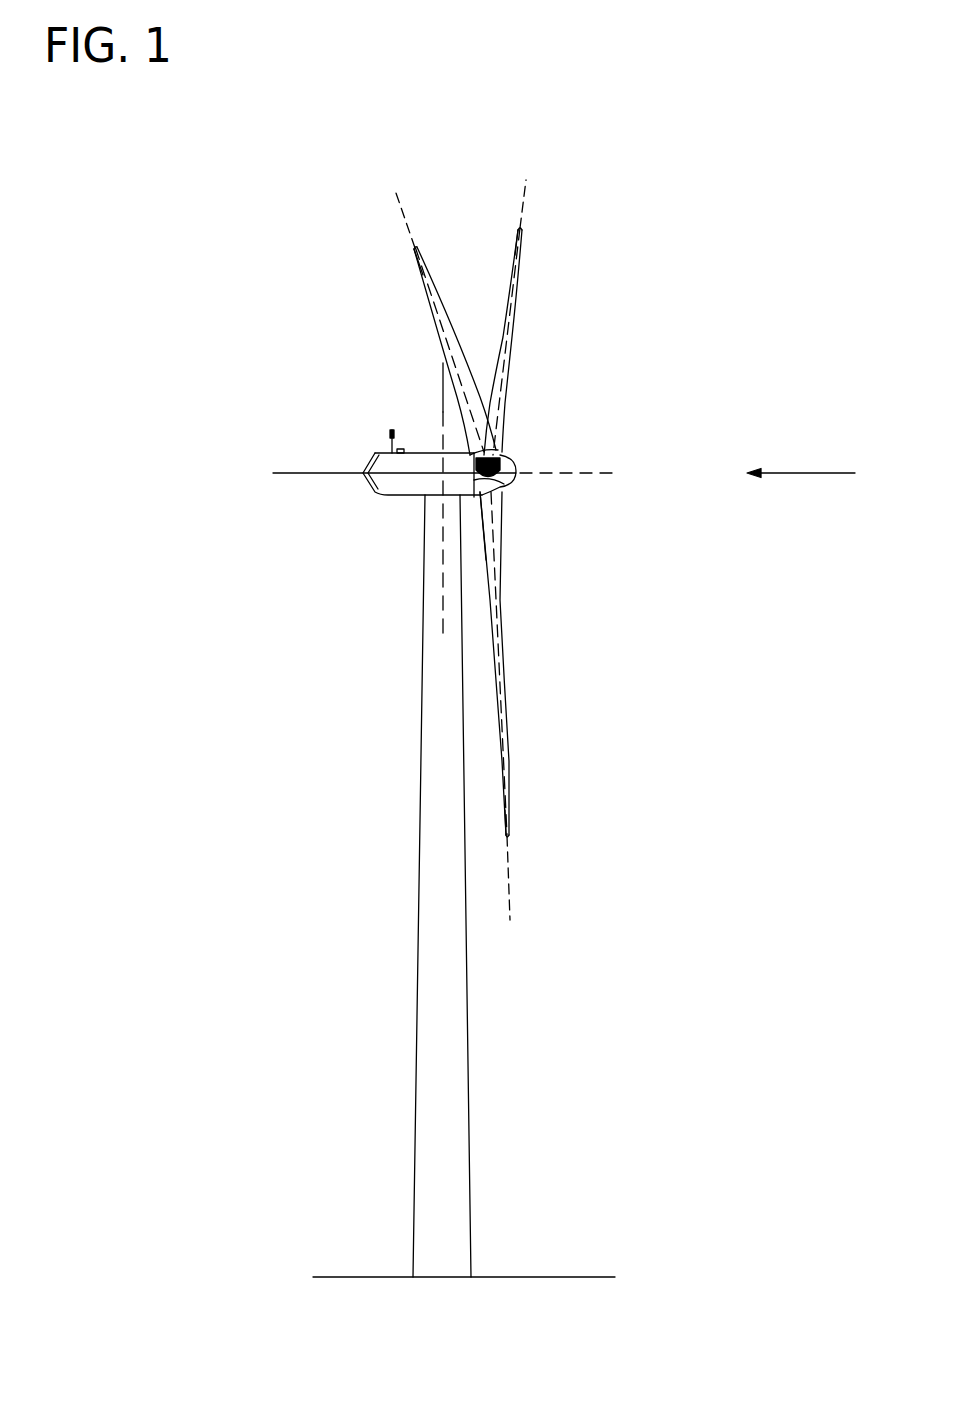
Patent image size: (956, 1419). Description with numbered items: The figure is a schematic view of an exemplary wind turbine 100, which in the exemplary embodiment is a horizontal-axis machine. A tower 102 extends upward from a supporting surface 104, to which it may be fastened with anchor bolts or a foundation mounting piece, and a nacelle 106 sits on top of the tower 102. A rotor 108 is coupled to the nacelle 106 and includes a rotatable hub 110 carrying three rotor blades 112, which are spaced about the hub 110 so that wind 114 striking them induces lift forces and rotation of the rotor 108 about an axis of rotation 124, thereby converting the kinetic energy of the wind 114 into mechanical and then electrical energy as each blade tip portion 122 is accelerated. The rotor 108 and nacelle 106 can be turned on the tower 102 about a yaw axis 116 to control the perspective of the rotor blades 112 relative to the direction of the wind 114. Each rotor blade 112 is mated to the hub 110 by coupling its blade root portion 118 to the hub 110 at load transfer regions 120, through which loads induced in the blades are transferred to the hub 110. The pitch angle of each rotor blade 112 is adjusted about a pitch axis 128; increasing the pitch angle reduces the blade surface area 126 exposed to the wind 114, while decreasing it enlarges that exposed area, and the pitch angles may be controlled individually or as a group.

The wind turbine 100 is at (200, 258).
The tower 102 is at (417, 1043).
The supporting surface 104 is at (372, 1277).
The nacelle 106 is at (396, 497).
The rotor 108 is at (540, 364).
The rotatable hub 110 is at (510, 467).
The rotor blades 112 is at (443, 347).
The wind 114 is at (823, 473).
The yaw axis 116 is at (443, 397).
The blade root portion 118 is at (500, 552).
The load transfer regions 120 is at (497, 447).
The blade tip portion 122 is at (418, 262).
The axis of rotation 124 is at (580, 476).
The blade surface area 126 is at (500, 412).
The pitch axis 128 is at (392, 205).